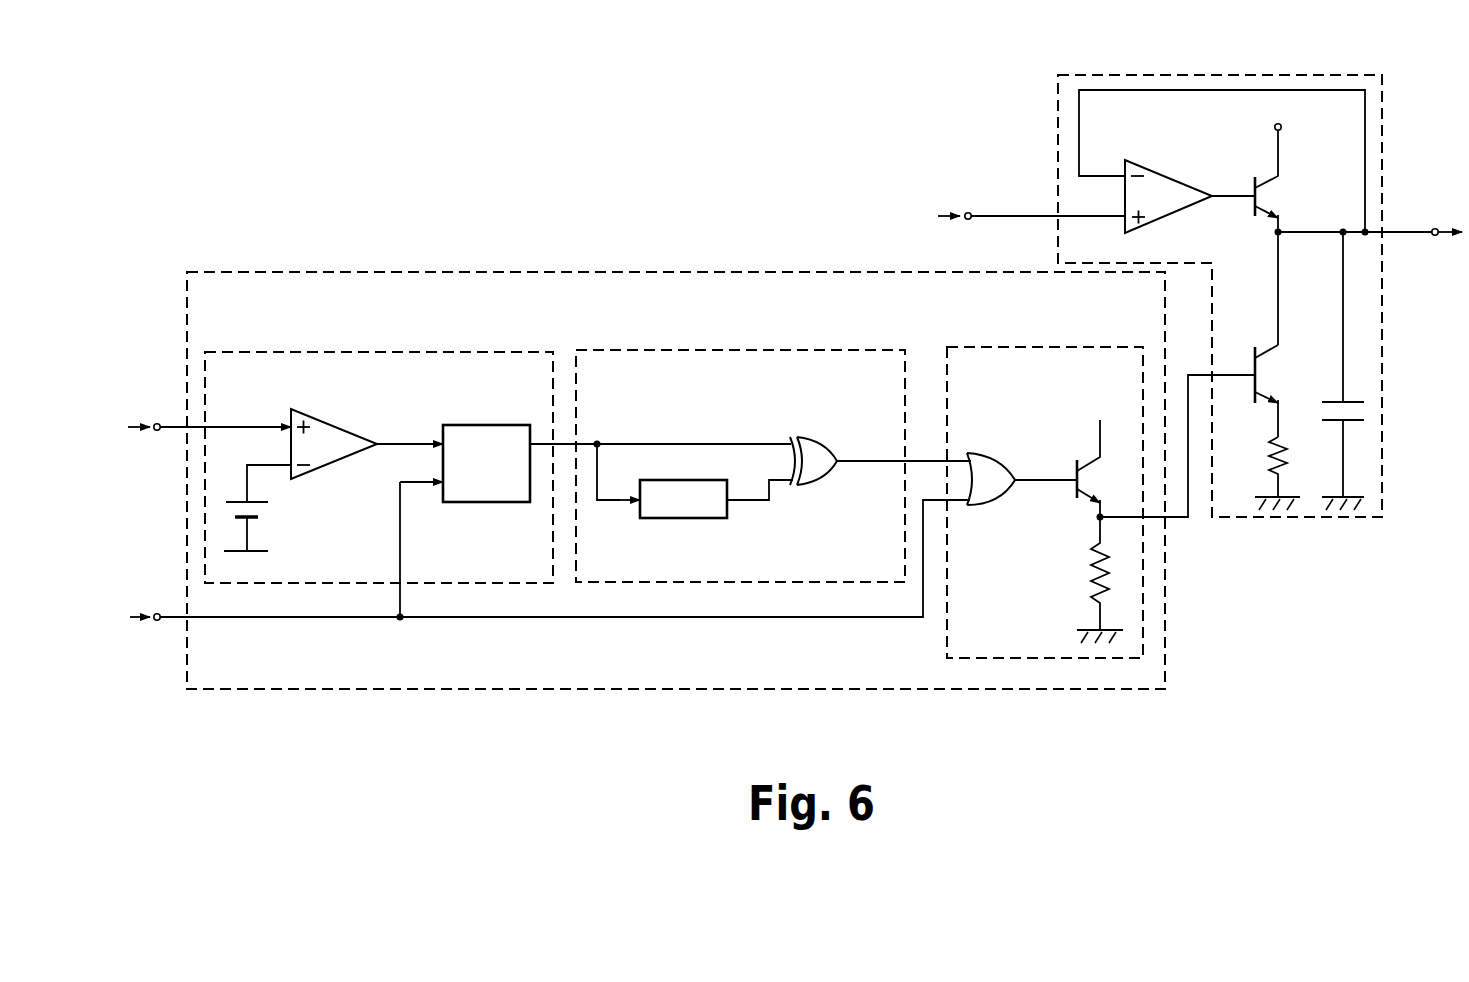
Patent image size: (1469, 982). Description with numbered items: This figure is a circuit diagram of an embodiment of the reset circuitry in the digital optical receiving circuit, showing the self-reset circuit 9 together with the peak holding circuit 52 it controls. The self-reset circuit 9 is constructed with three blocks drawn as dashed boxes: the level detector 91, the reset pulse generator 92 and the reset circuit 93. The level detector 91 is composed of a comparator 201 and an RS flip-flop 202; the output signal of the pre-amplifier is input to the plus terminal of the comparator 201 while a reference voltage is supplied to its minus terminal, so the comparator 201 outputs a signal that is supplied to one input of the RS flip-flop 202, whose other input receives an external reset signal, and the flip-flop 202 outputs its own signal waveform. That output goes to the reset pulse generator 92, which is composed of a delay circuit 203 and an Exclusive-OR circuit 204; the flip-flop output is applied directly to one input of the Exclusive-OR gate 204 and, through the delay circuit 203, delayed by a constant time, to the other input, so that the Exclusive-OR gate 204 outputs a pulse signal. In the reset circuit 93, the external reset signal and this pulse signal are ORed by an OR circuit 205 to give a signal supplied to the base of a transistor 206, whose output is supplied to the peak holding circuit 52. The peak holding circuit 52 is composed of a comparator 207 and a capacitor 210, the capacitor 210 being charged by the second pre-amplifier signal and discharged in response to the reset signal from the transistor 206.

The self-reset circuit 9 is at (757, 228).
The level detector 91 is at (514, 326).
The reset pulse generator 92 is at (864, 326).
The reset circuit 93 is at (1123, 326).
The peak holding circuit 52 is at (1336, 52).
The comparator 201 is at (322, 392).
The RS flip-flop 202 is at (439, 431).
The delay circuit 203 is at (688, 522).
The Exclusive-OR circuit 204 is at (812, 438).
The OR circuit 205 is at (1013, 437).
The transistor 206 is at (1102, 446).
The comparator 207 is at (1182, 178).
The capacitor 210 is at (1317, 411).